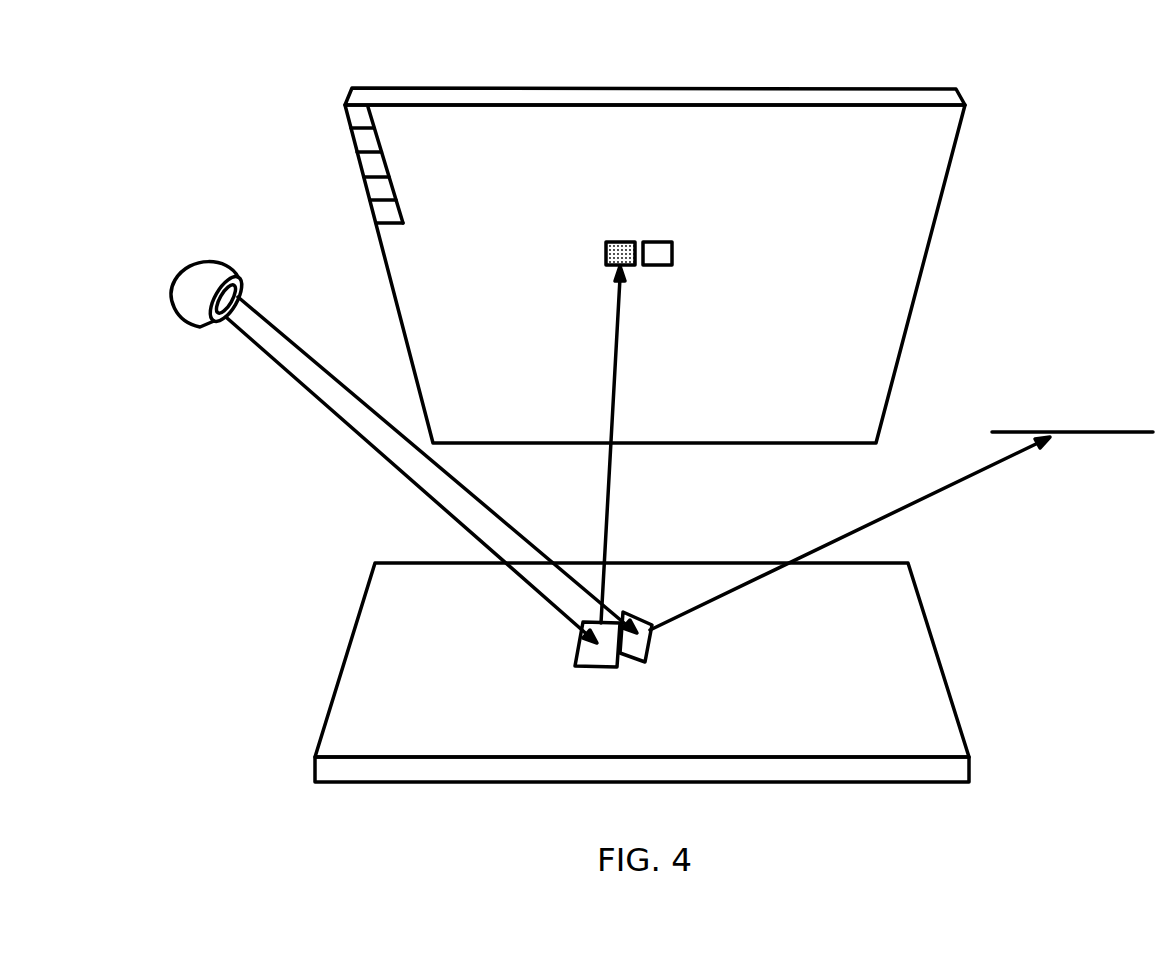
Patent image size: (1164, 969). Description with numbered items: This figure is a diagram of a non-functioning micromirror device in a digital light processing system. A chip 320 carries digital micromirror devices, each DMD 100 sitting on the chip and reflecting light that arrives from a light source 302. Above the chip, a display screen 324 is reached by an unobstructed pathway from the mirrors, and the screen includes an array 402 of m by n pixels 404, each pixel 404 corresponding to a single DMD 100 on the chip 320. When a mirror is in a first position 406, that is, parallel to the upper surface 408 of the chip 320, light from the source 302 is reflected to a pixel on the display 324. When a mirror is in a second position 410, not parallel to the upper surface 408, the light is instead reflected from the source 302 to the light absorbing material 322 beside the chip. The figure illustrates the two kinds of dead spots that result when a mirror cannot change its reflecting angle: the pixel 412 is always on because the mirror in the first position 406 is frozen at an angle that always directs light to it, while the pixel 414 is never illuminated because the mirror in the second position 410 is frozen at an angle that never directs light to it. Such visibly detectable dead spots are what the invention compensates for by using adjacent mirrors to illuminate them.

The DMD 100 is at (661, 678).
The source 302 is at (187, 322).
The chip 320 is at (691, 675).
The light absorbing material 322 is at (1073, 430).
The display screen 324 is at (930, 243).
The array of pixels 402 is at (702, 260).
The pixel 404 is at (358, 120).
The first position 406 is at (593, 668).
The upper surface 408 is at (875, 637).
The second position 410 is at (630, 662).
The pixel 412 is at (605, 253).
The pixel 414 is at (672, 253).